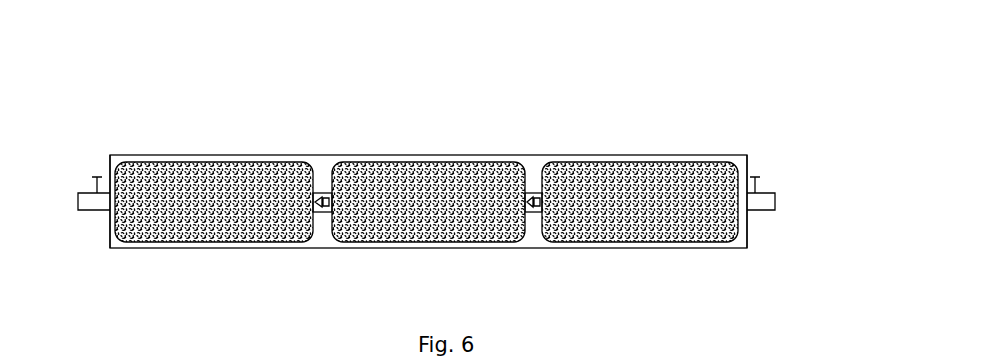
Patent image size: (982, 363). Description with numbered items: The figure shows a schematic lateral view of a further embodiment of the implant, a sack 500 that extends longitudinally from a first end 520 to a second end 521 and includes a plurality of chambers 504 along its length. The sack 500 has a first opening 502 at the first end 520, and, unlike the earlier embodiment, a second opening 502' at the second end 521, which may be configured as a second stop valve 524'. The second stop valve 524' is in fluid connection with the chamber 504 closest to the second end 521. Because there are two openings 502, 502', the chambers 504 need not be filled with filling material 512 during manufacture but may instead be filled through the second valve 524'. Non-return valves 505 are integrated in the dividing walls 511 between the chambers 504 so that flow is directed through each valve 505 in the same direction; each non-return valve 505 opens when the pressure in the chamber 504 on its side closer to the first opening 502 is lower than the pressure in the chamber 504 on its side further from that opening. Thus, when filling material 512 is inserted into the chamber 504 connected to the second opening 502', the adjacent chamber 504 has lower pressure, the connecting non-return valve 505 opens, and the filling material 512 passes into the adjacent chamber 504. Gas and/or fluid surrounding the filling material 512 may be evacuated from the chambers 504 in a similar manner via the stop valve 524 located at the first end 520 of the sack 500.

The sack 500 is at (503, 155).
The first opening 502 is at (776, 251).
The second opening 502' is at (81, 247).
The chamber 504 is at (430, 168).
The non-return valve 505 is at (323, 210).
The dividing wall 511 is at (322, 175).
The filling material 512 is at (200, 227).
The first end 520 is at (742, 170).
The second end 521 is at (112, 163).
The stop valve 524 is at (789, 174).
The second stop valve 524' is at (68, 171).